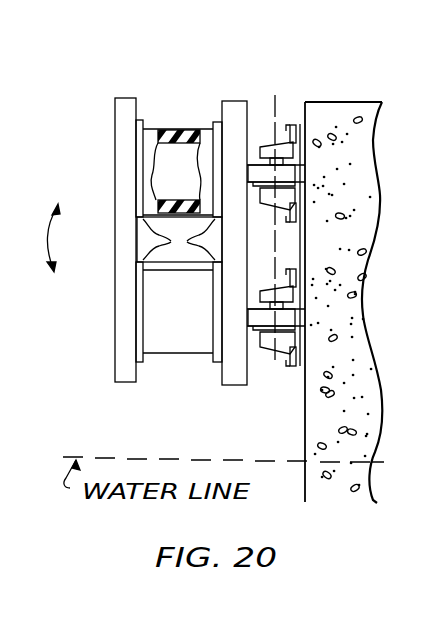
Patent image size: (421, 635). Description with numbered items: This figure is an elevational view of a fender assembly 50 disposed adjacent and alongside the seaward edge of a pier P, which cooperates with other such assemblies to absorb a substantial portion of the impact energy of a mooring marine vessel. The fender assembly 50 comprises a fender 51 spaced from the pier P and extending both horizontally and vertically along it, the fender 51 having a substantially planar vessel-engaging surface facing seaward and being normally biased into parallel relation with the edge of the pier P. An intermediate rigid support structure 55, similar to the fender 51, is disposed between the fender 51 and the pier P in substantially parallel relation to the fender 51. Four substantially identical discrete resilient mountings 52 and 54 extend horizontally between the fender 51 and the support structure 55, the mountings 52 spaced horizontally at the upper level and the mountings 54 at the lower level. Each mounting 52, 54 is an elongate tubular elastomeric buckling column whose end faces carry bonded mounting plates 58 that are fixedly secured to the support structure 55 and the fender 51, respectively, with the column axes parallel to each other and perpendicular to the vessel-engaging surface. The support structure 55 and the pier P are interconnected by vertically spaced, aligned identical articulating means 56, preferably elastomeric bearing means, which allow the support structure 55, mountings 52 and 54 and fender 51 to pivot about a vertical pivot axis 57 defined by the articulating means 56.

The fender assembly 50 is at (141, 92).
The fender 51 is at (115, 130).
The resilient mounting 52 is at (176, 128).
The resilient mounting 54 is at (183, 355).
The intermediate rigid support structure 55 is at (241, 100).
The articulating means 56 is at (282, 146).
The vertical pivot axis 57 is at (278, 231).
The mounting plate 58 is at (179, 239).
The pier P is at (357, 92).